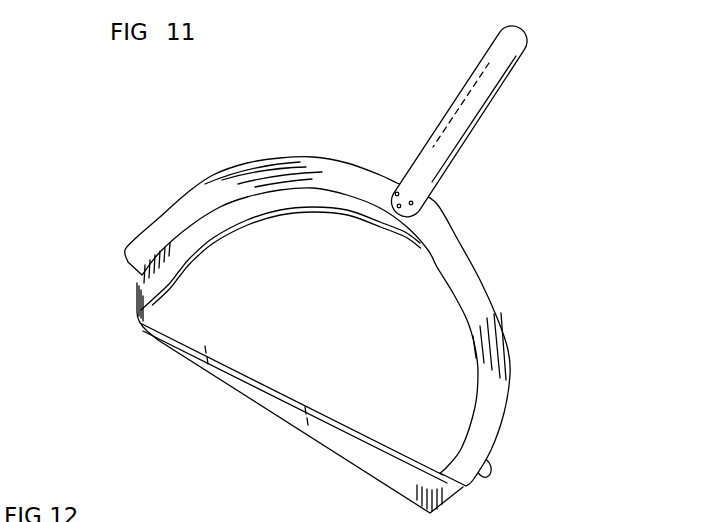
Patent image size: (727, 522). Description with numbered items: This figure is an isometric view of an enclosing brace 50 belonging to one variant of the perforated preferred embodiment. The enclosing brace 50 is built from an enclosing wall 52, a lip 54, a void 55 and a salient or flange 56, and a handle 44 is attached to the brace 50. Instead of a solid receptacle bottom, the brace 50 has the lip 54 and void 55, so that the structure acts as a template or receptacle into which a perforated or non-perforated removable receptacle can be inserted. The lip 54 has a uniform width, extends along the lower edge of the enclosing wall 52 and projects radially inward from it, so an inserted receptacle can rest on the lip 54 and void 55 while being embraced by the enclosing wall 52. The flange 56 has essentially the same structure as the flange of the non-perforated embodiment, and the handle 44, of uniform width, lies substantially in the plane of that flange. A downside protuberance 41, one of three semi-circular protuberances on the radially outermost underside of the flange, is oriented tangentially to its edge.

The downside protuberance 41 is at (490, 465).
The handle 44 is at (487, 82).
The enclosing brace 50 is at (361, 269).
The enclosing wall 52 is at (216, 217).
The lip 54 is at (188, 259).
The void 55 is at (330, 365).
The flange 56 is at (182, 210).